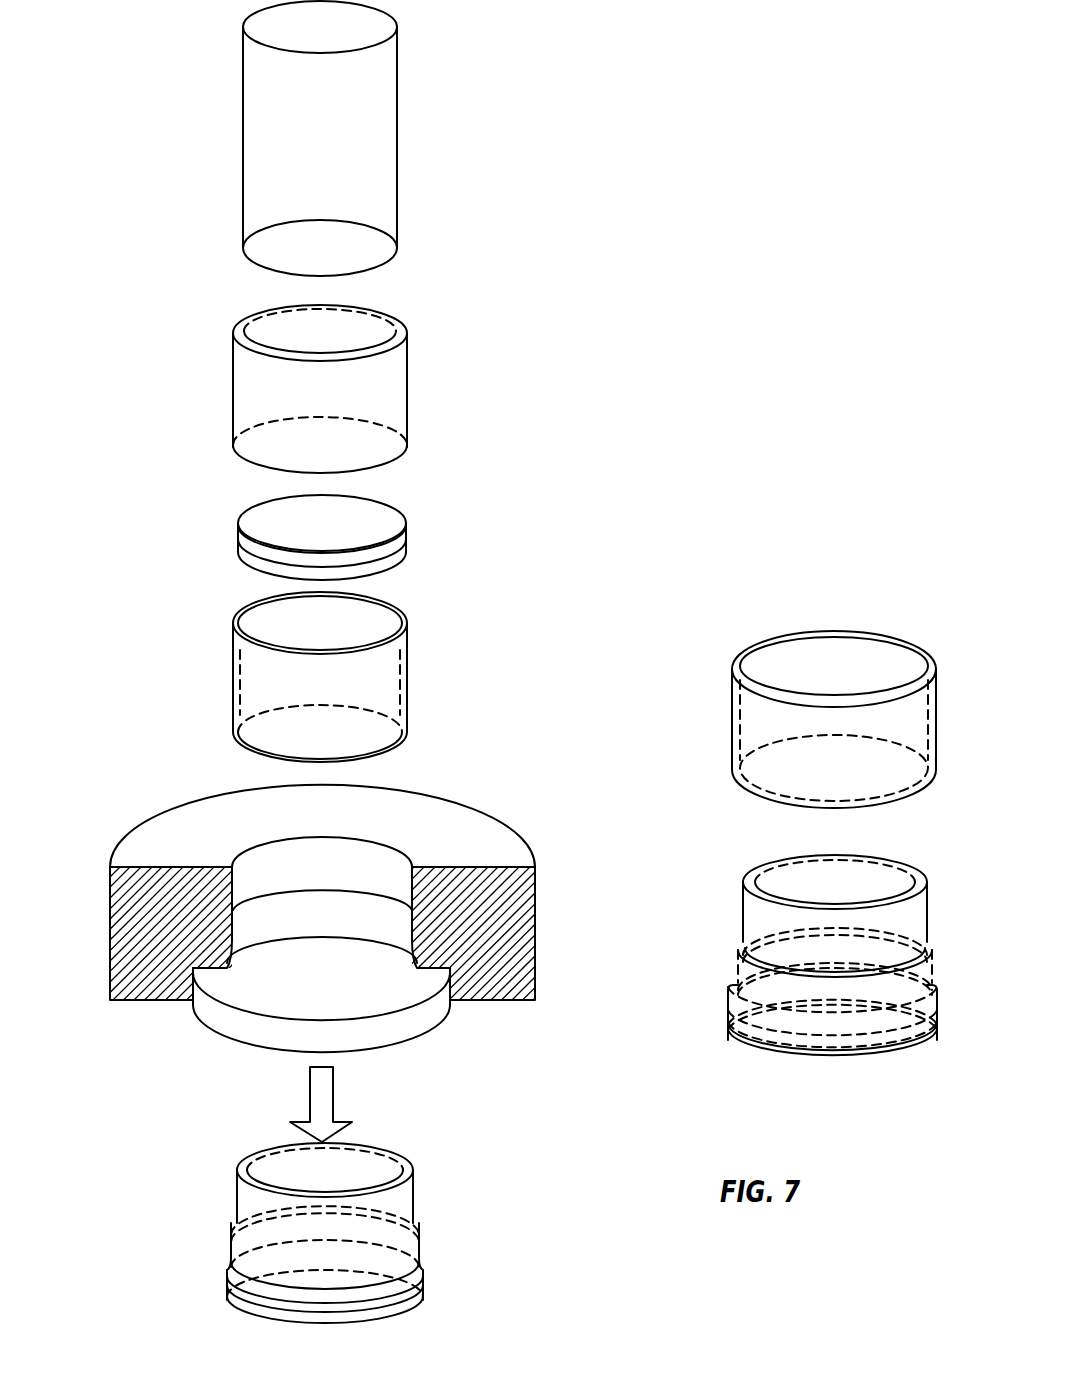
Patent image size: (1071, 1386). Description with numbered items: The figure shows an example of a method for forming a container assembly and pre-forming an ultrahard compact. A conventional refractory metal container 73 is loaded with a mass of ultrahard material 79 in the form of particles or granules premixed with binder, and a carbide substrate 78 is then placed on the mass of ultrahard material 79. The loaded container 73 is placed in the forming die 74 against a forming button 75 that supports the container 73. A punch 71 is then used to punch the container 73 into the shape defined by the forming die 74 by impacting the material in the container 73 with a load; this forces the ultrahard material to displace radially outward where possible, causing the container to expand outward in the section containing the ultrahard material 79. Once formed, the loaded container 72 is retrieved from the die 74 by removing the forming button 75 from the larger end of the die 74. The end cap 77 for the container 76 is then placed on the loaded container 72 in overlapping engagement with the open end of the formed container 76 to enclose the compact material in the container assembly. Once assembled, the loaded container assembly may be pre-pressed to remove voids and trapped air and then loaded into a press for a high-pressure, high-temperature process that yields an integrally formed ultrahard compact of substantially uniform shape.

The punch 71 is at (250, 152).
The loaded container 72 is at (229, 1248).
The refractory metal container 73 is at (250, 694).
The forming die 74 is at (120, 934).
The forming button 75 is at (225, 1023).
The formed container 76 is at (225, 1283).
The end cap 77 is at (750, 733).
The carbide substrate 78 is at (243, 406).
The mass of ultrahard material 79 is at (240, 548).